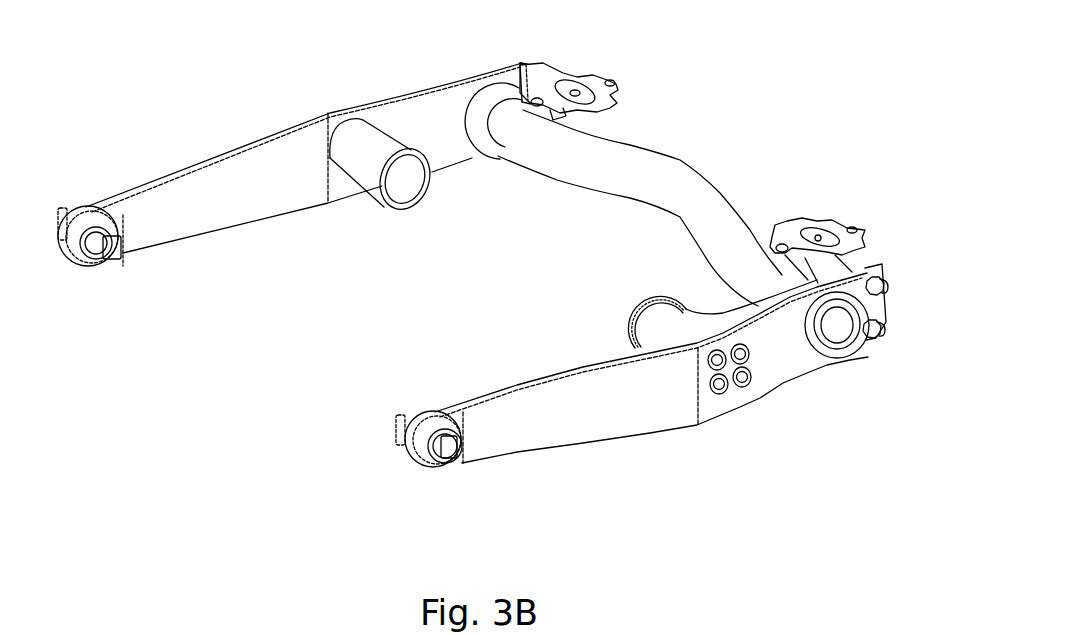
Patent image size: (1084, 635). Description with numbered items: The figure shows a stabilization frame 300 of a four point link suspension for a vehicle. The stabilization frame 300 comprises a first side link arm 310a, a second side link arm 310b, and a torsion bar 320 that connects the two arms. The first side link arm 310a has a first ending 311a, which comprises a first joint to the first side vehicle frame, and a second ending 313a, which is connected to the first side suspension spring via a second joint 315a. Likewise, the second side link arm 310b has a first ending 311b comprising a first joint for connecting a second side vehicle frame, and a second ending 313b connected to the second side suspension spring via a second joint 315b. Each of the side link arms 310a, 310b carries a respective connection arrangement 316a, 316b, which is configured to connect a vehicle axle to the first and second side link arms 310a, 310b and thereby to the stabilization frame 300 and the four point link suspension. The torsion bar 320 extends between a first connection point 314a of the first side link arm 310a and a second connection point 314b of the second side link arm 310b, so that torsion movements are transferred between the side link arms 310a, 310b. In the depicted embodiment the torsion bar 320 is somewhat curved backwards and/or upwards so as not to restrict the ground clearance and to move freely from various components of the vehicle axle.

The stabilization frame 300 is at (818, 78).
The first side link arm 310a is at (592, 422).
The second side link arm 310b is at (195, 185).
The first ending 311a is at (403, 443).
The first ending 311b is at (63, 257).
The second ending 313a is at (883, 303).
The second ending 313b is at (532, 62).
The first connection point 314a is at (837, 327).
The second connection point 314b is at (481, 73).
The second joint 315a is at (840, 230).
The second joint 315b is at (587, 78).
The connection arrangement 316a is at (655, 322).
The connection arrangement 316b is at (372, 170).
The torsion bar 320 is at (708, 187).